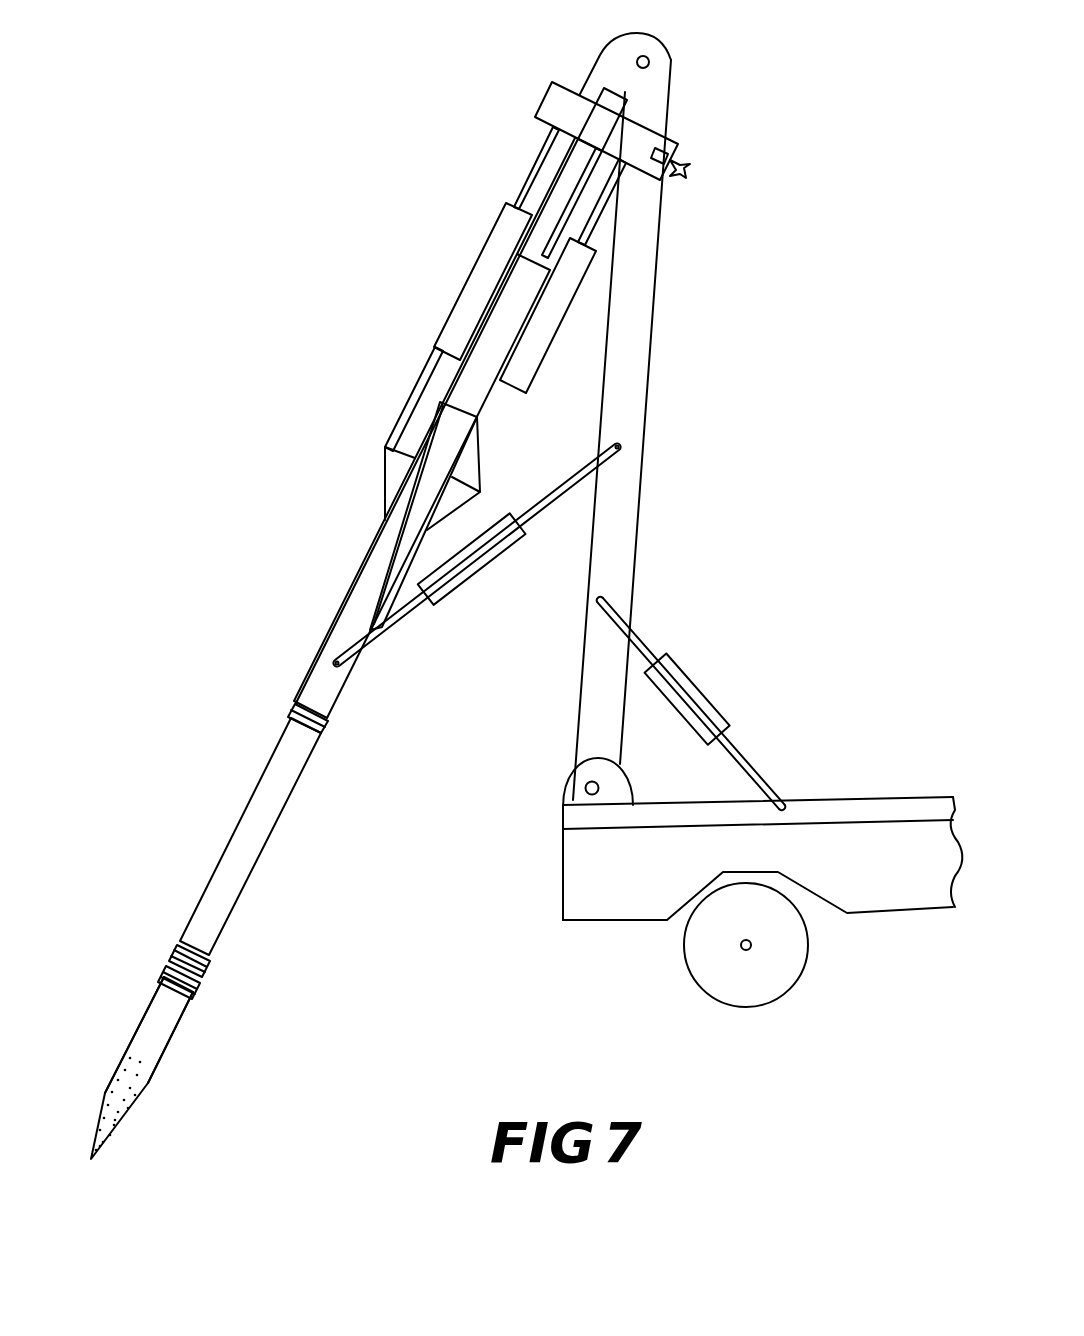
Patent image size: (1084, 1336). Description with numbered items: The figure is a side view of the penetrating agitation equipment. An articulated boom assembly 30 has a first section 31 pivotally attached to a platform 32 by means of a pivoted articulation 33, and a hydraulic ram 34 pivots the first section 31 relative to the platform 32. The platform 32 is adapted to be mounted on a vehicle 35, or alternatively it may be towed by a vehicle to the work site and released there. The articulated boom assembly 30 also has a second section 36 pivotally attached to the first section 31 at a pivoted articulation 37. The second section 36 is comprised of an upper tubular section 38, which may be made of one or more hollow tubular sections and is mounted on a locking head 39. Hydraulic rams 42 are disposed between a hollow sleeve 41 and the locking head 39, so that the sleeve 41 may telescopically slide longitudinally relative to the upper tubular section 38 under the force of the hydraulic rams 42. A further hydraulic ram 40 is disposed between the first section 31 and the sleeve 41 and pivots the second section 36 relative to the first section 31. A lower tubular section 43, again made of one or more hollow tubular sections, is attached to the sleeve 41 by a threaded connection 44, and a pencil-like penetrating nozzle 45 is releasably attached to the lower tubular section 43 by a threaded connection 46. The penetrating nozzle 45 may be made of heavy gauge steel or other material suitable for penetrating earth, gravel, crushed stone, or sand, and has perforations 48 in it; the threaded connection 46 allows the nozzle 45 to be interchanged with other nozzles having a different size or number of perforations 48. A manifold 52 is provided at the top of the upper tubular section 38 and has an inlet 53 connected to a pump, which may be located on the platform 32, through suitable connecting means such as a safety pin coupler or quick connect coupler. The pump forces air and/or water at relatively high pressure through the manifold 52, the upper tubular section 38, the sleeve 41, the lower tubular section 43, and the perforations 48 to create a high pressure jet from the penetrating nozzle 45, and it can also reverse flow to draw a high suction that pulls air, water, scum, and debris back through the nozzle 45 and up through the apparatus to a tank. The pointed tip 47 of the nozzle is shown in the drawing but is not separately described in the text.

The articulated boom assembly 30 is at (446, 181).
The first section 31 is at (656, 403).
The platform 32 is at (752, 877).
The pivoted articulation 33 is at (585, 788).
The hydraulic ram 34 is at (700, 700).
The vehicle 35 is at (593, 907).
The second section 36 is at (363, 518).
The pivoted articulation 37 is at (650, 60).
The upper tubular section 38 is at (533, 368).
The locking head 39 is at (590, 120).
The hydraulic ram 40 is at (458, 575).
The hollow sleeve 41 is at (378, 576).
The hydraulic rams 42 is at (455, 326).
The lower tubular section 43 is at (235, 885).
The threaded connection 44 is at (306, 732).
The penetrating nozzle 45 is at (176, 1085).
The threaded connection 46 is at (185, 995).
The point 47 is at (95, 1160).
The perforations 48 is at (130, 1058).
The manifold 52 is at (663, 150).
The inlet 53 is at (690, 170).